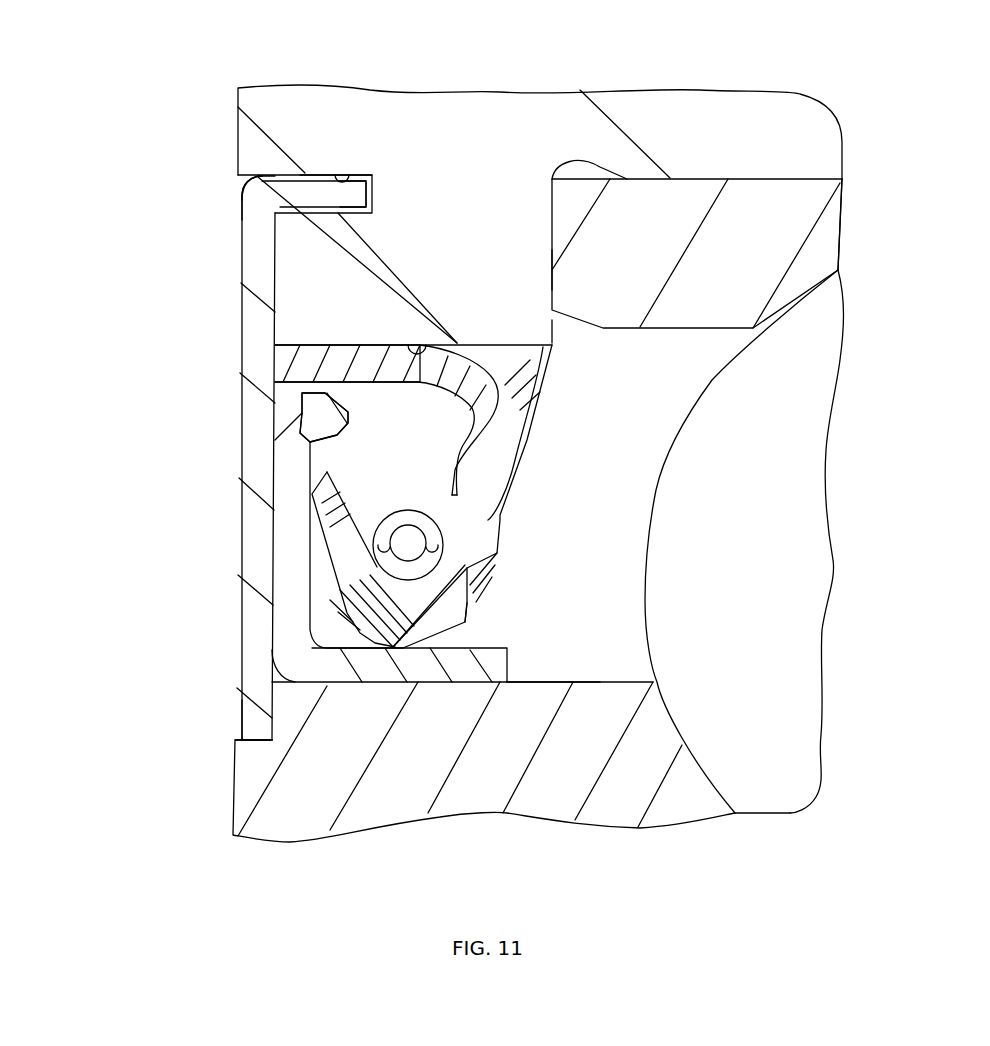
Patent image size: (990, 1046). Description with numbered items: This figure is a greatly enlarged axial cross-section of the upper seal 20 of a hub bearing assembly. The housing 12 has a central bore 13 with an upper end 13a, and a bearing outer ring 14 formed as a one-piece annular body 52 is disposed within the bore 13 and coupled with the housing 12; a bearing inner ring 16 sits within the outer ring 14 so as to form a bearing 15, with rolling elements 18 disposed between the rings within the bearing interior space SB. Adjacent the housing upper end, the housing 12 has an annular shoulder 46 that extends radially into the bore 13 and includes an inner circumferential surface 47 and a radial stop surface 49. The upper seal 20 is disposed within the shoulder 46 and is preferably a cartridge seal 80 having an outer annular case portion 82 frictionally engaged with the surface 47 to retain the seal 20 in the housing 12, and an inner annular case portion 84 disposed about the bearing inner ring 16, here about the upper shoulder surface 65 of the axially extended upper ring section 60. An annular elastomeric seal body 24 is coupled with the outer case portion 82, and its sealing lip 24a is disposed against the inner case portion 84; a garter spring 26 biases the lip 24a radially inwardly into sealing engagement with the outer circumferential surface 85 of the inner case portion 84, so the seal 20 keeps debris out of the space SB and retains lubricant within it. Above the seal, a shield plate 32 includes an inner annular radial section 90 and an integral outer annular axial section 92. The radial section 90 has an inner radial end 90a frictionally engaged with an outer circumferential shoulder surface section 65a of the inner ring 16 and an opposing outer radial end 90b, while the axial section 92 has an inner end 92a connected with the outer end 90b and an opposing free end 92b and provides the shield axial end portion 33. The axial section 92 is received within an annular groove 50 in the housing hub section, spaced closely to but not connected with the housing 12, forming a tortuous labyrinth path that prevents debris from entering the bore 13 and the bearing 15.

The housing 12 is at (492, 89).
The central bore 13 is at (790, 183).
The upper end of the housing bore 13a is at (286, 403).
The bearing outer ring 14 is at (760, 176).
The bearing 15 is at (875, 226).
The bearing inner ring 16 is at (620, 822).
The rolling elements 18 is at (804, 530).
The upper seal 20 is at (425, 516).
The elastomeric seal body 24 is at (498, 532).
The sealing lip 24a is at (312, 494).
The garter spring 26 is at (398, 522).
The shield plate 32 is at (224, 460).
The axial end portion 33 is at (330, 168).
The annular shoulder 46 is at (556, 346).
The inner circumferential surface 47 is at (425, 342).
The radial stop surface 49 is at (553, 268).
The annular groove 50 is at (350, 176).
The one-piece annular body 52 is at (832, 214).
The upper ring section 60 is at (530, 810).
The upper shoulder surface 65 is at (533, 682).
The outer circumferential shoulder surface section 65a is at (250, 740).
The cartridge seal 80 is at (542, 473).
The outer annular case portion 82 is at (370, 343).
The inner annular case portion 84 is at (437, 676).
The outer circumferential surface 85 is at (480, 646).
The inner annular radial section 90 is at (238, 318).
The inner radial end 90a is at (240, 707).
The outer radial end 90b is at (256, 200).
The outer annular axial section 92 is at (312, 170).
The inner end 92a is at (258, 186).
The free end 92b is at (362, 196).
The bearing interior space SB is at (667, 376).